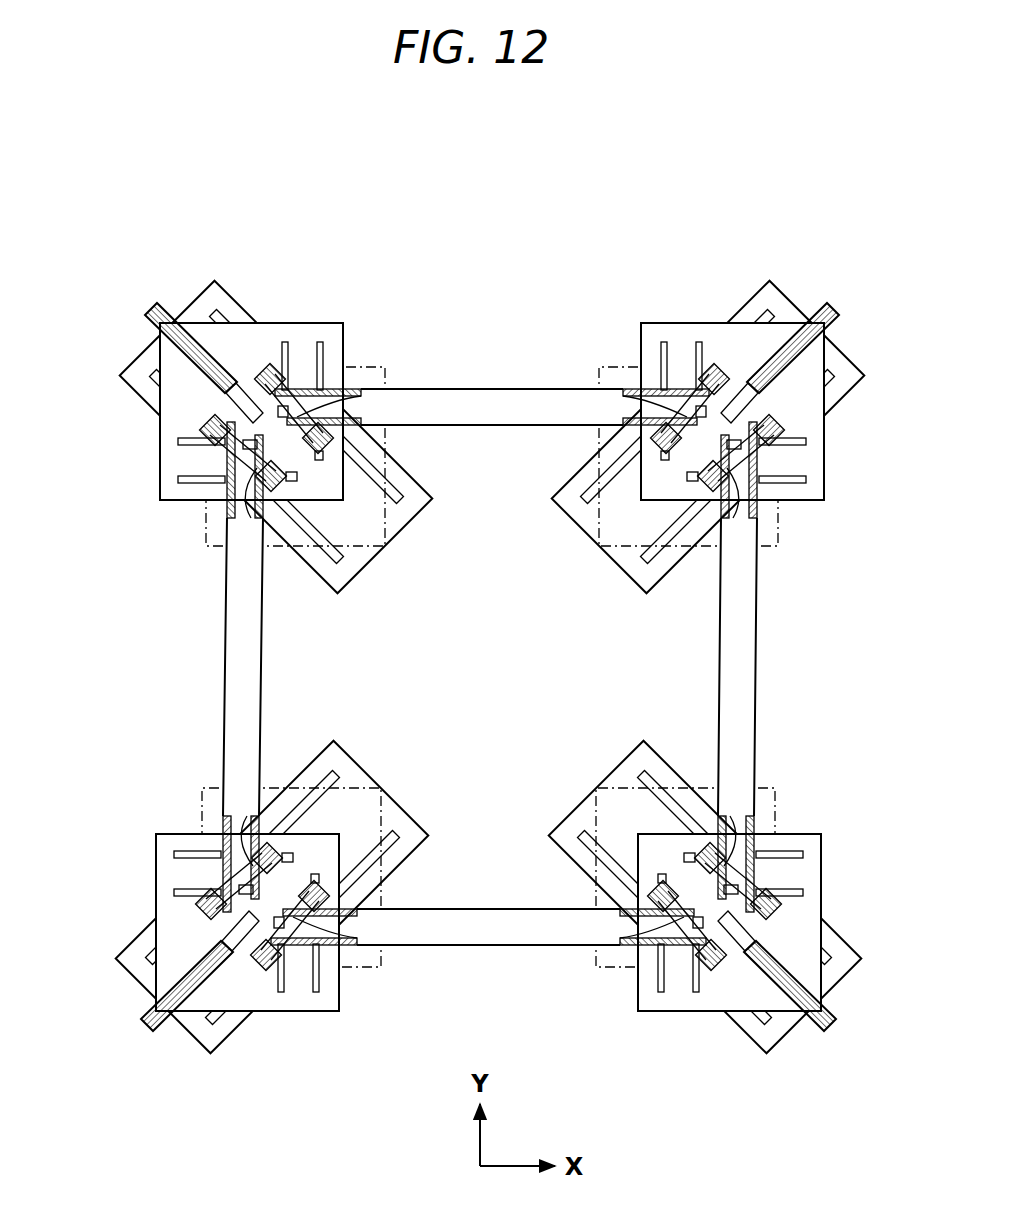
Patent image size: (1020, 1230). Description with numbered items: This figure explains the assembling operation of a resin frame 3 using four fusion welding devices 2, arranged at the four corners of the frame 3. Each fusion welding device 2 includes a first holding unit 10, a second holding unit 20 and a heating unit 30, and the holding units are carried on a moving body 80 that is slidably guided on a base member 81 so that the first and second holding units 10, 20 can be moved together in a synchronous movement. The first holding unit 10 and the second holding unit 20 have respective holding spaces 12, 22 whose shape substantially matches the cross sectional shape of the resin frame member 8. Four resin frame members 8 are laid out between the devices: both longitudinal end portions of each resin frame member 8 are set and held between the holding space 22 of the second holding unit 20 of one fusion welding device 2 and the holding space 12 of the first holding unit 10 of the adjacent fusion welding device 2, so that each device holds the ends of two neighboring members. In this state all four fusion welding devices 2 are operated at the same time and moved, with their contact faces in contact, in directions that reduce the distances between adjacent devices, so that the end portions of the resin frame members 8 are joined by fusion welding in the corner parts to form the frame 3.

The fusion welding device 2 is at (120, 397).
The frame 3 is at (495, 637).
The resin frame member 8 is at (512, 407).
The first holding unit 10 is at (262, 375).
The holding space 12 is at (353, 398).
The second holding unit 20 is at (207, 418).
The holding space 22 is at (264, 505).
The heating unit 30 is at (147, 323).
The moving body 80 is at (165, 473).
The base member 81 is at (218, 298).